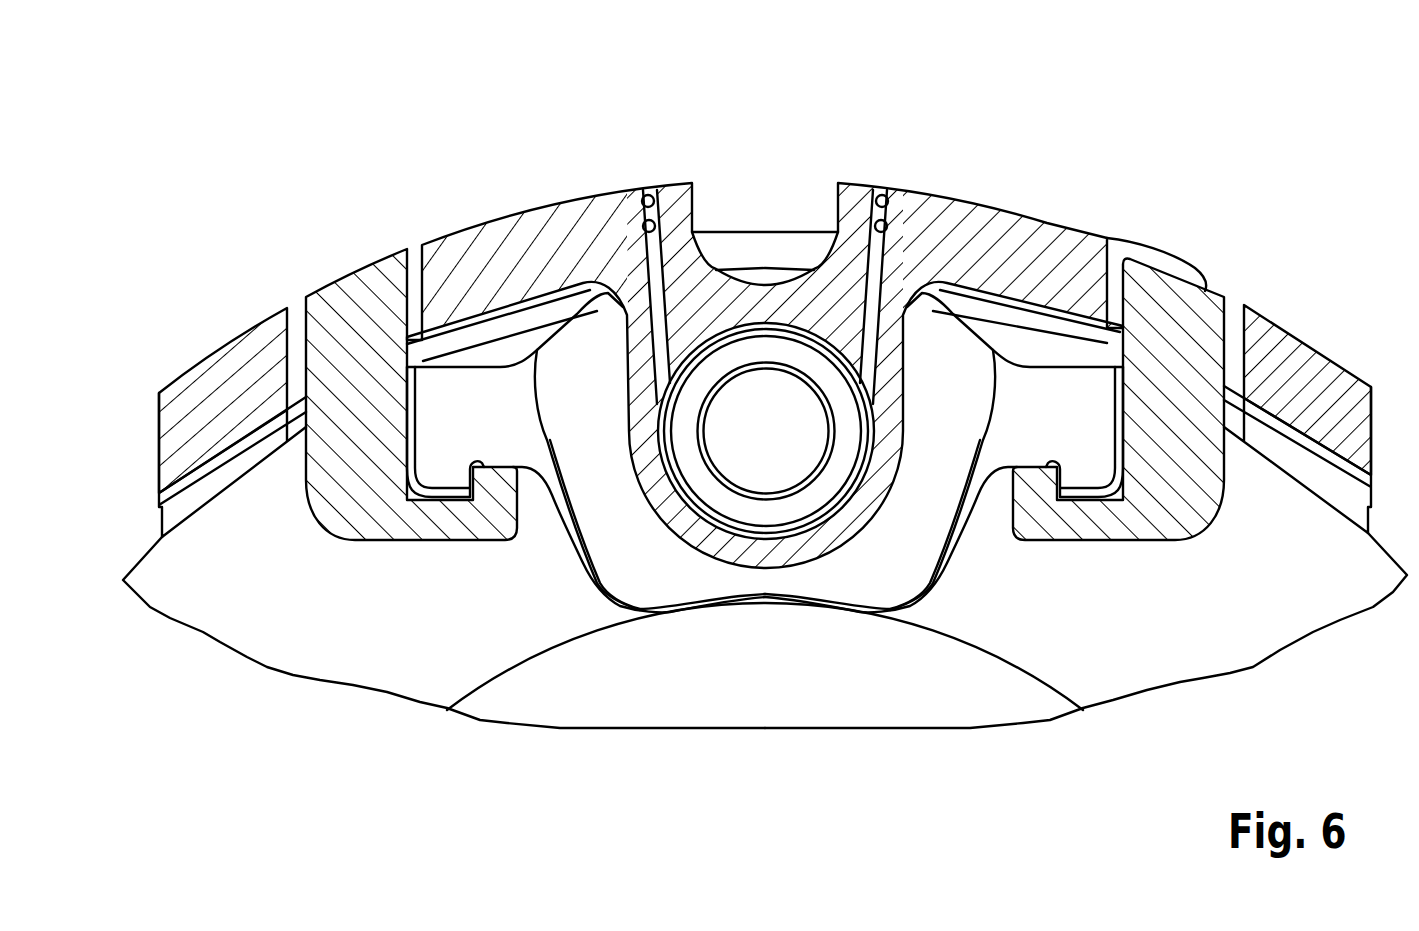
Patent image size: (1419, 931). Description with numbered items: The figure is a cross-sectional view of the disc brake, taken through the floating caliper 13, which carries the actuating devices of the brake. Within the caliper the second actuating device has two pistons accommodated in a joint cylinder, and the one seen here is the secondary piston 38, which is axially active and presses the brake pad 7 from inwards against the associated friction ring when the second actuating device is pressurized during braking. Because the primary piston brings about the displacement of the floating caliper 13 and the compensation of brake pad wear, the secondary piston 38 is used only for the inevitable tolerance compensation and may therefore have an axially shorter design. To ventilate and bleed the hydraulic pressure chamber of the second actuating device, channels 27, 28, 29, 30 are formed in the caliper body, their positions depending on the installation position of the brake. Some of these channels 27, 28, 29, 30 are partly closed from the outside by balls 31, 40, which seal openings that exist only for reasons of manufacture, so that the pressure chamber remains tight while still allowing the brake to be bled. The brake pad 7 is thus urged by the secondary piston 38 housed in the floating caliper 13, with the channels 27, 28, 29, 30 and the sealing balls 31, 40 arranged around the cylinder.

The brake pad 7 is at (620, 573).
The floating caliper 13 is at (1078, 226).
The channel 27 is at (651, 272).
The channel 28 is at (879, 272).
The channel 29 is at (647, 266).
The channel 30 is at (883, 266).
The ball 31 is at (648, 194).
The secondary piston 38 is at (773, 512).
The ball 40 is at (884, 194).